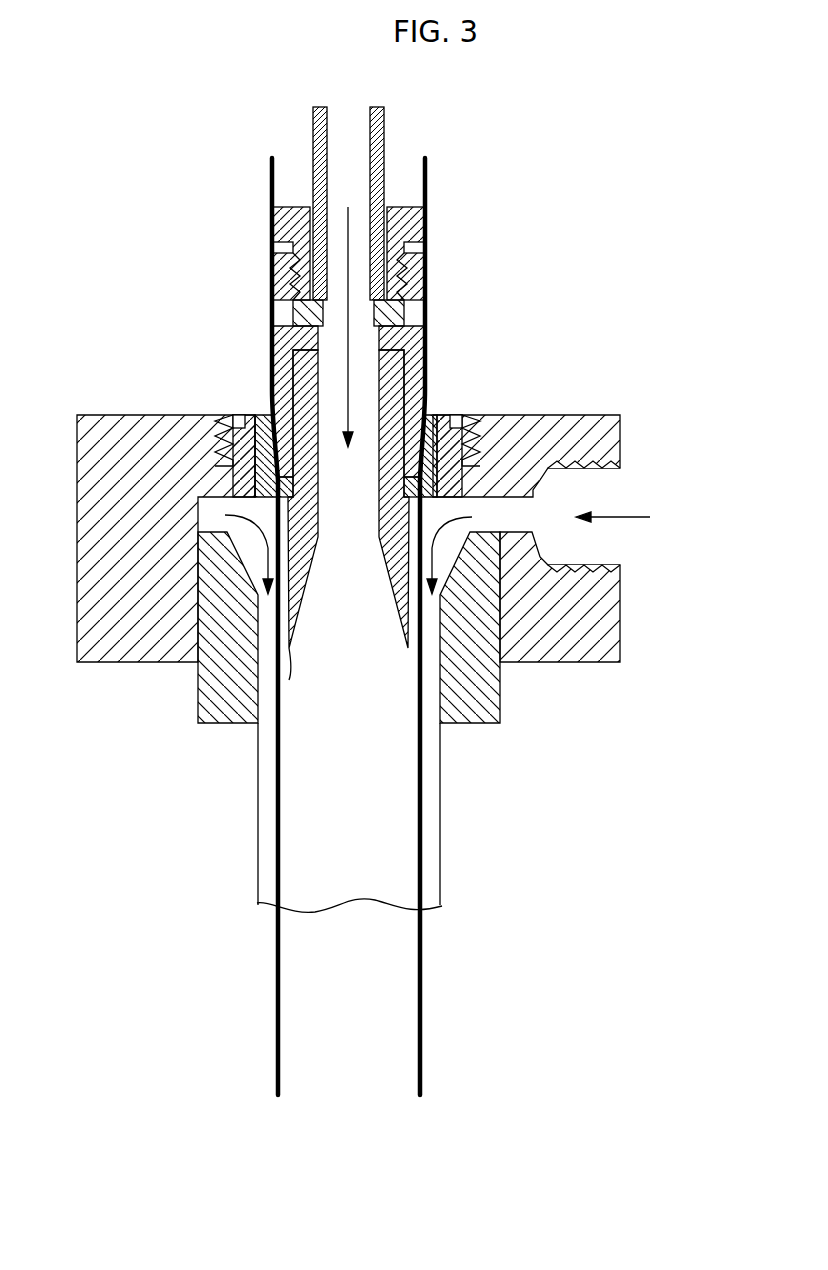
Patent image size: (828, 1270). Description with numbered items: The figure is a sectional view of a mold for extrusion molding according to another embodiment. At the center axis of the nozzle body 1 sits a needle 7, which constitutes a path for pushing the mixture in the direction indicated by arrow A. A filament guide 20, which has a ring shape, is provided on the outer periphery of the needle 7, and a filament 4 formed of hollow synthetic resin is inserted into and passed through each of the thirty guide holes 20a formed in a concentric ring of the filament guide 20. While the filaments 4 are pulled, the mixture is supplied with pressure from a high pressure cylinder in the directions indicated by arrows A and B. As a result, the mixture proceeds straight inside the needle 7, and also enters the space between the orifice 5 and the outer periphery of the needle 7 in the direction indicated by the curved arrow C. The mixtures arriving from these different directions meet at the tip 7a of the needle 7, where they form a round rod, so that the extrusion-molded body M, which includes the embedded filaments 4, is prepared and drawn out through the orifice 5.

The nozzle body 1 is at (585, 623).
The filament 4 is at (428, 180).
The orifice 5 is at (497, 692).
The needle 7 is at (405, 352).
The tip of the needle 7a is at (290, 648).
The filament guide 20 is at (262, 418).
The guide hole 20a is at (430, 482).
The extrusion-molded body M is at (432, 828).
The arrow A is at (348, 310).
The arrow B is at (626, 519).
The curved arrow C is at (357, 547).